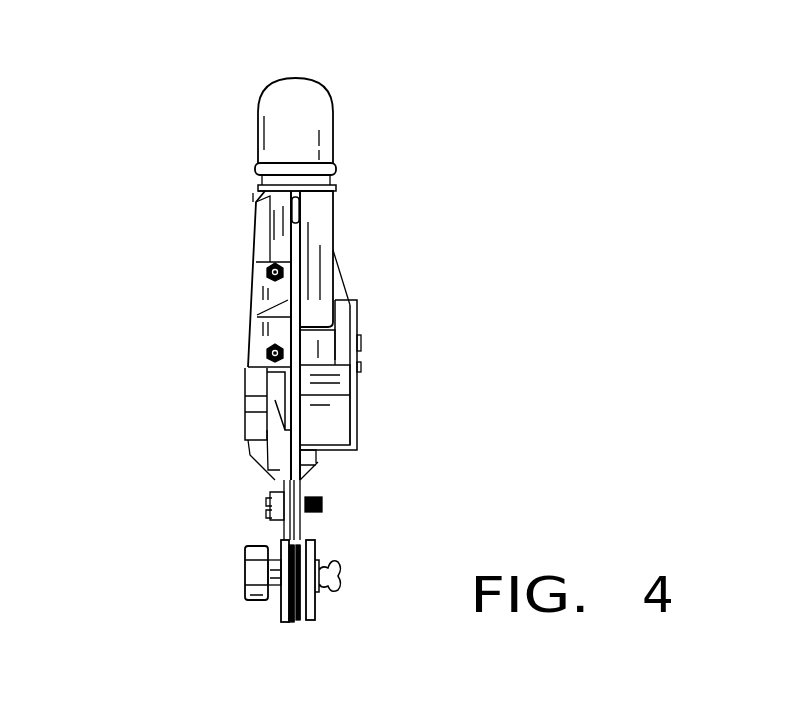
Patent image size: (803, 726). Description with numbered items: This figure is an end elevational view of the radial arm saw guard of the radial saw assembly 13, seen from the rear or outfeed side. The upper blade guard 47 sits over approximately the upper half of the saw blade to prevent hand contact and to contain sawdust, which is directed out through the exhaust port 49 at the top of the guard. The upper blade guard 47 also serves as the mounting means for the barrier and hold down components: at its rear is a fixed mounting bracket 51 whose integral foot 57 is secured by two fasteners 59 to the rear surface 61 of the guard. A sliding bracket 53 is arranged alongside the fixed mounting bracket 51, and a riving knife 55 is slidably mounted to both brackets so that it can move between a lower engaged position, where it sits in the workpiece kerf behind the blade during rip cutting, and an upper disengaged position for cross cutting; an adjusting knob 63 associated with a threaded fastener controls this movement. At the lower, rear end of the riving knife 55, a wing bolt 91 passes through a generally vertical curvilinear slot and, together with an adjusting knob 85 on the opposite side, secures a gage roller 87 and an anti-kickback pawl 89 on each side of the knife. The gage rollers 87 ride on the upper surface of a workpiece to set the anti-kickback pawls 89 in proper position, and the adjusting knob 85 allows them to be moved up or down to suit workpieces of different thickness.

The radial saw assembly 13 is at (165, 225).
The exhaust port 49 is at (305, 104).
The upper blade guard 47 is at (258, 200).
The fixed mounting bracket 51 is at (293, 256).
The rear surface 61 is at (318, 215).
The sliding bracket 53 is at (354, 322).
The fasteners 59 is at (267, 272).
The integral foot 57 is at (262, 298).
The adjusting knob 63 is at (258, 430).
The riving knife 55 is at (322, 462).
The gage roller 87 is at (283, 622).
The anti-kickback pawl 89 is at (293, 622).
The adjusting knob 85 is at (253, 574).
The wing bolt 91 is at (340, 573).